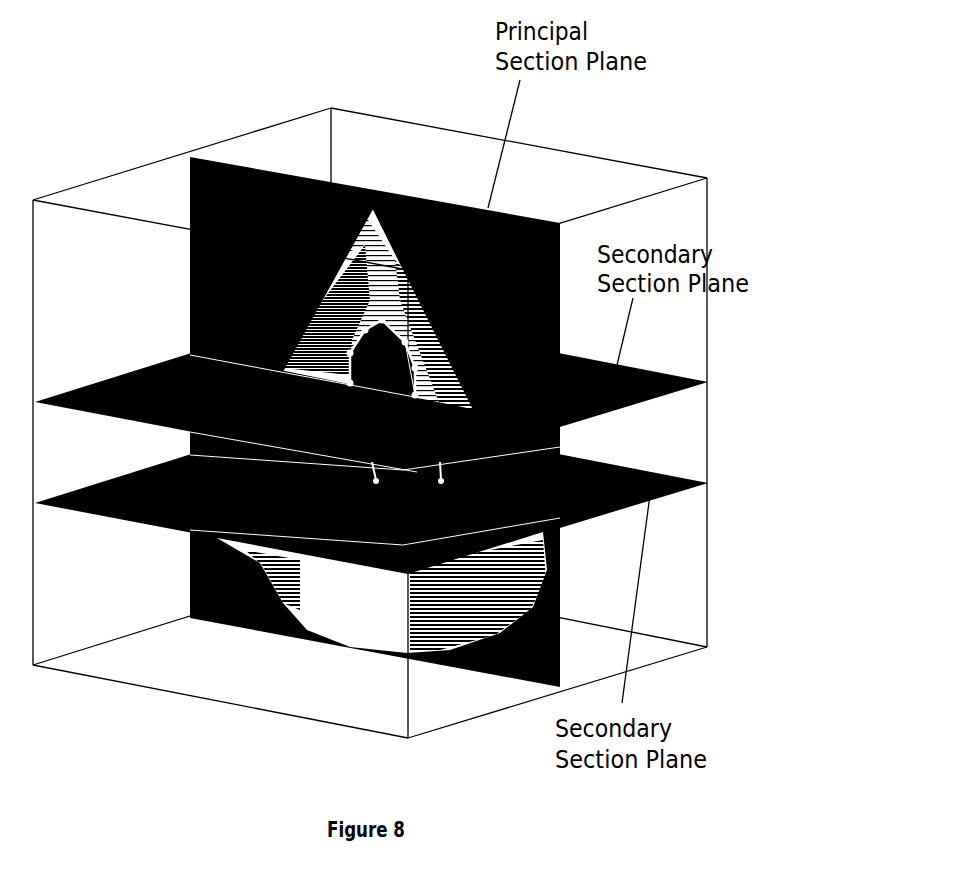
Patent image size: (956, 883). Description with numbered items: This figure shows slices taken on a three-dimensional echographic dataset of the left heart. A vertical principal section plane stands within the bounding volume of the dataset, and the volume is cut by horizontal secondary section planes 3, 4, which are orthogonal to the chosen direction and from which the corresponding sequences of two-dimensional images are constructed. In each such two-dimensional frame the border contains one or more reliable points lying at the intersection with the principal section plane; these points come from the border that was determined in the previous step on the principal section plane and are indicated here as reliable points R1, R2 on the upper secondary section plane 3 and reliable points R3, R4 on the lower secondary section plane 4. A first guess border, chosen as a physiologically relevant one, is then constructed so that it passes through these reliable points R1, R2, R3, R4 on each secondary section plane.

The secondary section plane 3 is at (108, 382).
The secondary section plane 4 is at (108, 517).
The reliable point R1 is at (347, 383).
The reliable point R2 is at (418, 394).
The reliable point R3 is at (370, 493).
The reliable point R4 is at (450, 483).